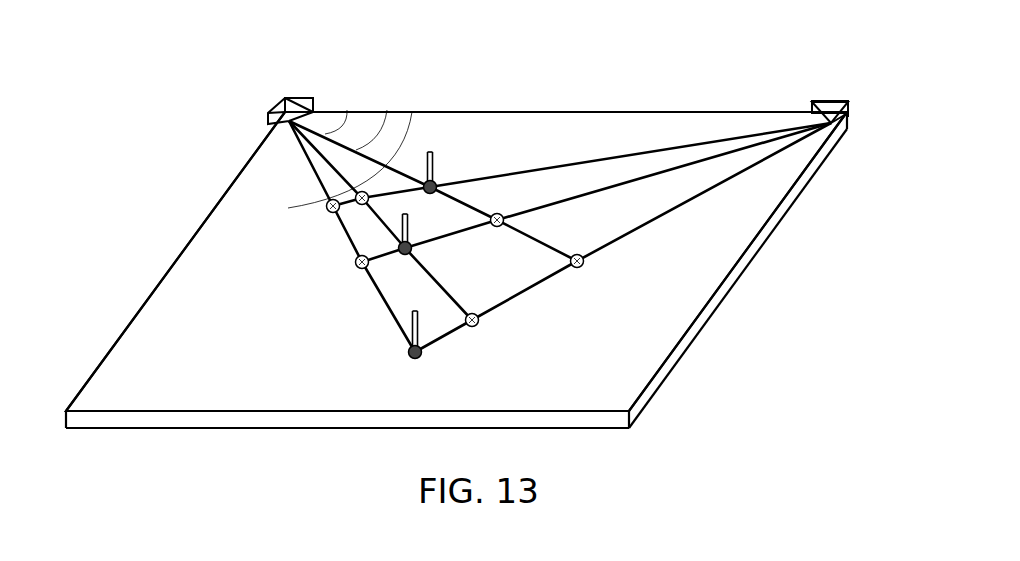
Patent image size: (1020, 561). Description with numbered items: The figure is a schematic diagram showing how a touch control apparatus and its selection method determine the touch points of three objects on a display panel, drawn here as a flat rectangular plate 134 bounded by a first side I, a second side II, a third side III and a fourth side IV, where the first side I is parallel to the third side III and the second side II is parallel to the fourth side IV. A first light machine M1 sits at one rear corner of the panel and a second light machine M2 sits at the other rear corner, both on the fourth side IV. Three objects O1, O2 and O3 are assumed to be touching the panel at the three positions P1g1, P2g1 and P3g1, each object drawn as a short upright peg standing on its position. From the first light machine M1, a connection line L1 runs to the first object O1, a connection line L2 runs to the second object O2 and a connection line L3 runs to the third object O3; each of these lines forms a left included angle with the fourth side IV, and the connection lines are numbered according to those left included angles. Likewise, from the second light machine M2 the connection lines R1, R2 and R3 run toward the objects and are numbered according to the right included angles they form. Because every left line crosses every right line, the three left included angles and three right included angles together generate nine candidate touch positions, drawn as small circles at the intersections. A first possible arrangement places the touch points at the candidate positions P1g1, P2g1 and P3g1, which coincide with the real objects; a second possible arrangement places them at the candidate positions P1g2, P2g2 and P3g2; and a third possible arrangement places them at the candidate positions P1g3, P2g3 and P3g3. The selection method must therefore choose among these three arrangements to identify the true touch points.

The substrate plate 134 is at (742, 262).
The first side I is at (175, 261).
The second side II is at (347, 436).
The third side III is at (738, 261).
The fourth side IV is at (562, 98).
The first light machine M1 is at (278, 104).
The second light machine M2 is at (831, 103).
The connection line L1 is at (322, 182).
The connection line L2 is at (448, 292).
The connection line L3 is at (560, 250).
The connection line R1 is at (641, 228).
The connection line R2 is at (573, 197).
The connection line R3 is at (501, 176).
The first object O1 is at (414, 321).
The second object O2 is at (404, 223).
The third object O3 is at (425, 160).
The candidate touch position P1g1 is at (404, 368).
The candidate touch position P1g2 is at (486, 336).
The candidate touch position P1g3 is at (575, 276).
The candidate touch position P2g1 is at (433, 254).
The candidate touch position P2g2 is at (532, 219).
The candidate touch position P2g3 is at (356, 270).
The candidate touch position P3g1 is at (454, 173).
The candidate touch position P3g2 is at (310, 222).
The candidate touch position P3g3 is at (357, 208).